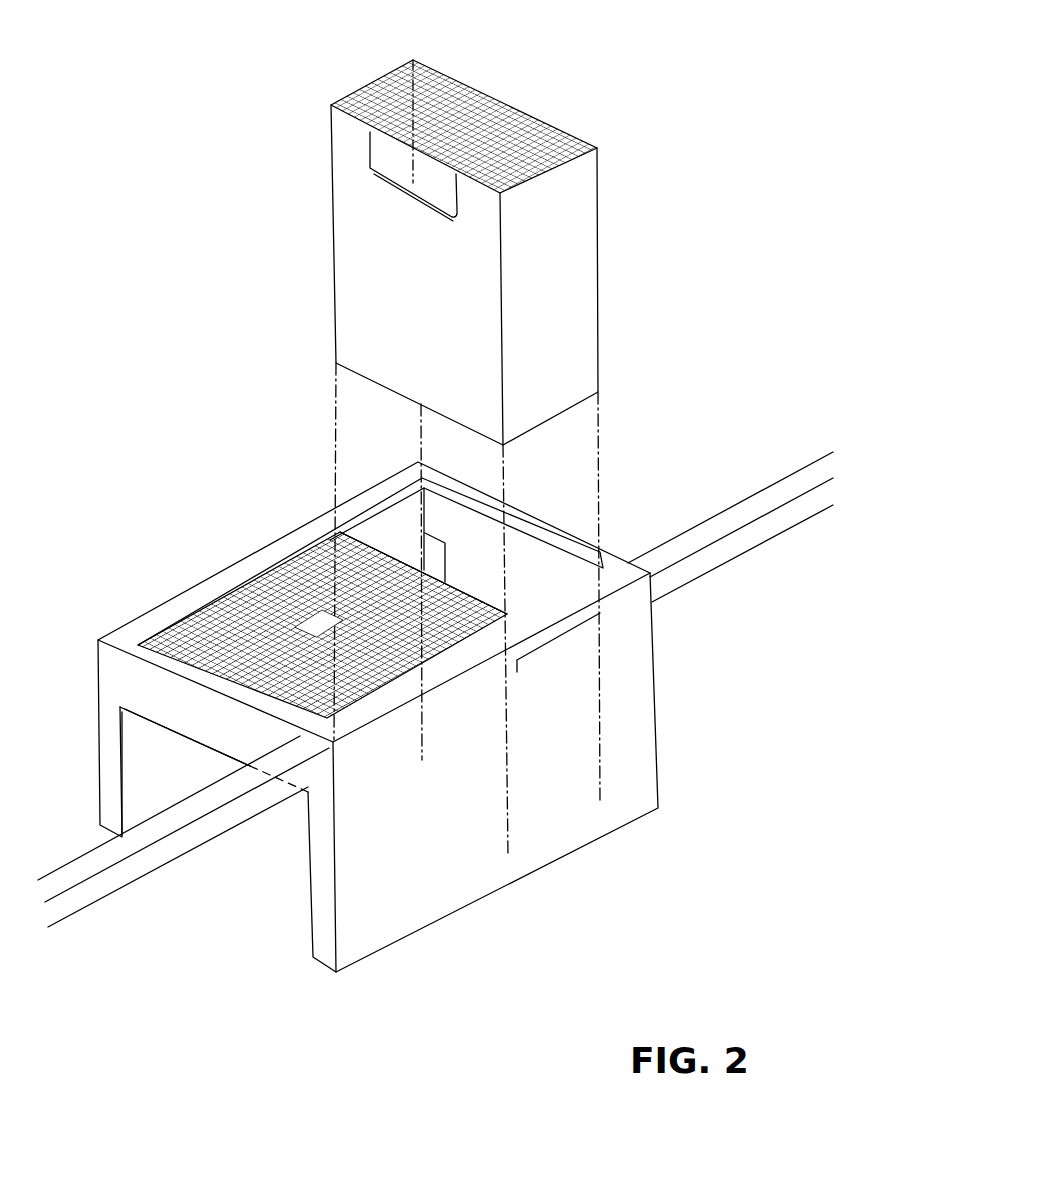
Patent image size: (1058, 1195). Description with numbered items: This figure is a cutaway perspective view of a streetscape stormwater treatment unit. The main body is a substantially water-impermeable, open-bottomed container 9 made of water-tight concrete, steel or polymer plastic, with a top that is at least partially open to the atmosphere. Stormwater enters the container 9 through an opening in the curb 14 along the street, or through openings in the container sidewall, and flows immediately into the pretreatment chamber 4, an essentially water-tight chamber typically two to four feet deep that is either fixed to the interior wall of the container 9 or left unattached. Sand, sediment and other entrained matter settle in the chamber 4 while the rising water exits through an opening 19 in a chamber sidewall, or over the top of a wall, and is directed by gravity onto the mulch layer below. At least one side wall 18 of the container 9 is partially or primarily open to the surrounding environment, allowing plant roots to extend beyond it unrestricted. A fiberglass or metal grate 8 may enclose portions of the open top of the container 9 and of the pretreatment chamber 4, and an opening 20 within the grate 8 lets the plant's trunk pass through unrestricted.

The pretreatment chamber 4 is at (556, 290).
The grate 8 is at (381, 103).
The container 9 is at (433, 873).
The curb 14 is at (733, 557).
The side wall 18 is at (222, 728).
The opening 19 is at (398, 162).
The opening 20 is at (318, 626).